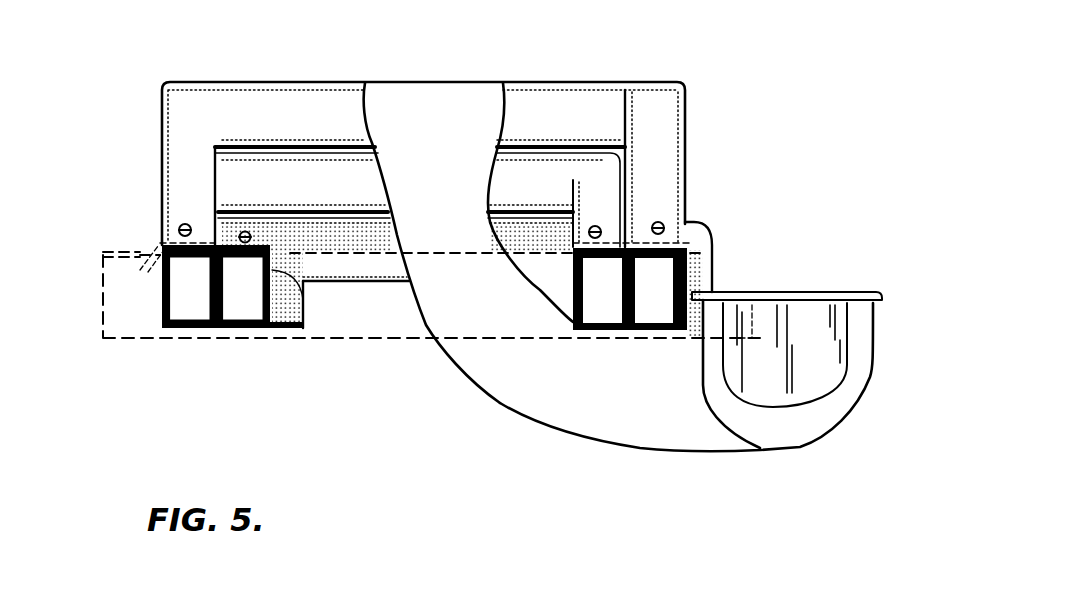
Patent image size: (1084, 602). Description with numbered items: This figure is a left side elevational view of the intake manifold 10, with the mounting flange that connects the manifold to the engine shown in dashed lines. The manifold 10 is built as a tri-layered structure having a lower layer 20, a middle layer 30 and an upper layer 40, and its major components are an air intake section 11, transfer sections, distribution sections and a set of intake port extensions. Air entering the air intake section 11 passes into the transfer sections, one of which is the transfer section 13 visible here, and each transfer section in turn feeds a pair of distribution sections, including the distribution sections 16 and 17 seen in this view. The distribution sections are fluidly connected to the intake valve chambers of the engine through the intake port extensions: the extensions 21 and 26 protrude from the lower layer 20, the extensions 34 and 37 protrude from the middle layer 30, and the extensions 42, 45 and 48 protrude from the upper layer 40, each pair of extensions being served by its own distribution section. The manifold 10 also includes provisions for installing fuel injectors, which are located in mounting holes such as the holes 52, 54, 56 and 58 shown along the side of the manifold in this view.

The manifold 10 is at (167, 412).
The air intake section 11 is at (796, 414).
The transfer section 13 is at (513, 343).
The distribution section 16 is at (558, 107).
The distribution section 17 is at (282, 105).
The lower layer 20 is at (353, 270).
The intake port extension 21 is at (703, 252).
The intake port extension 26 is at (252, 307).
The middle layer 30 is at (323, 167).
The intake port extension 34 is at (605, 330).
The intake port extension 37 is at (222, 152).
The upper layer 40 is at (600, 110).
The intake port extension 42 is at (667, 140).
The intake port extension 45 is at (303, 330).
The intake port extension 48 is at (188, 315).
The mounting hole 52 is at (660, 224).
The mounting hole 54 is at (595, 226).
The mounting hole 56 is at (246, 232).
The mounting hole 58 is at (182, 225).